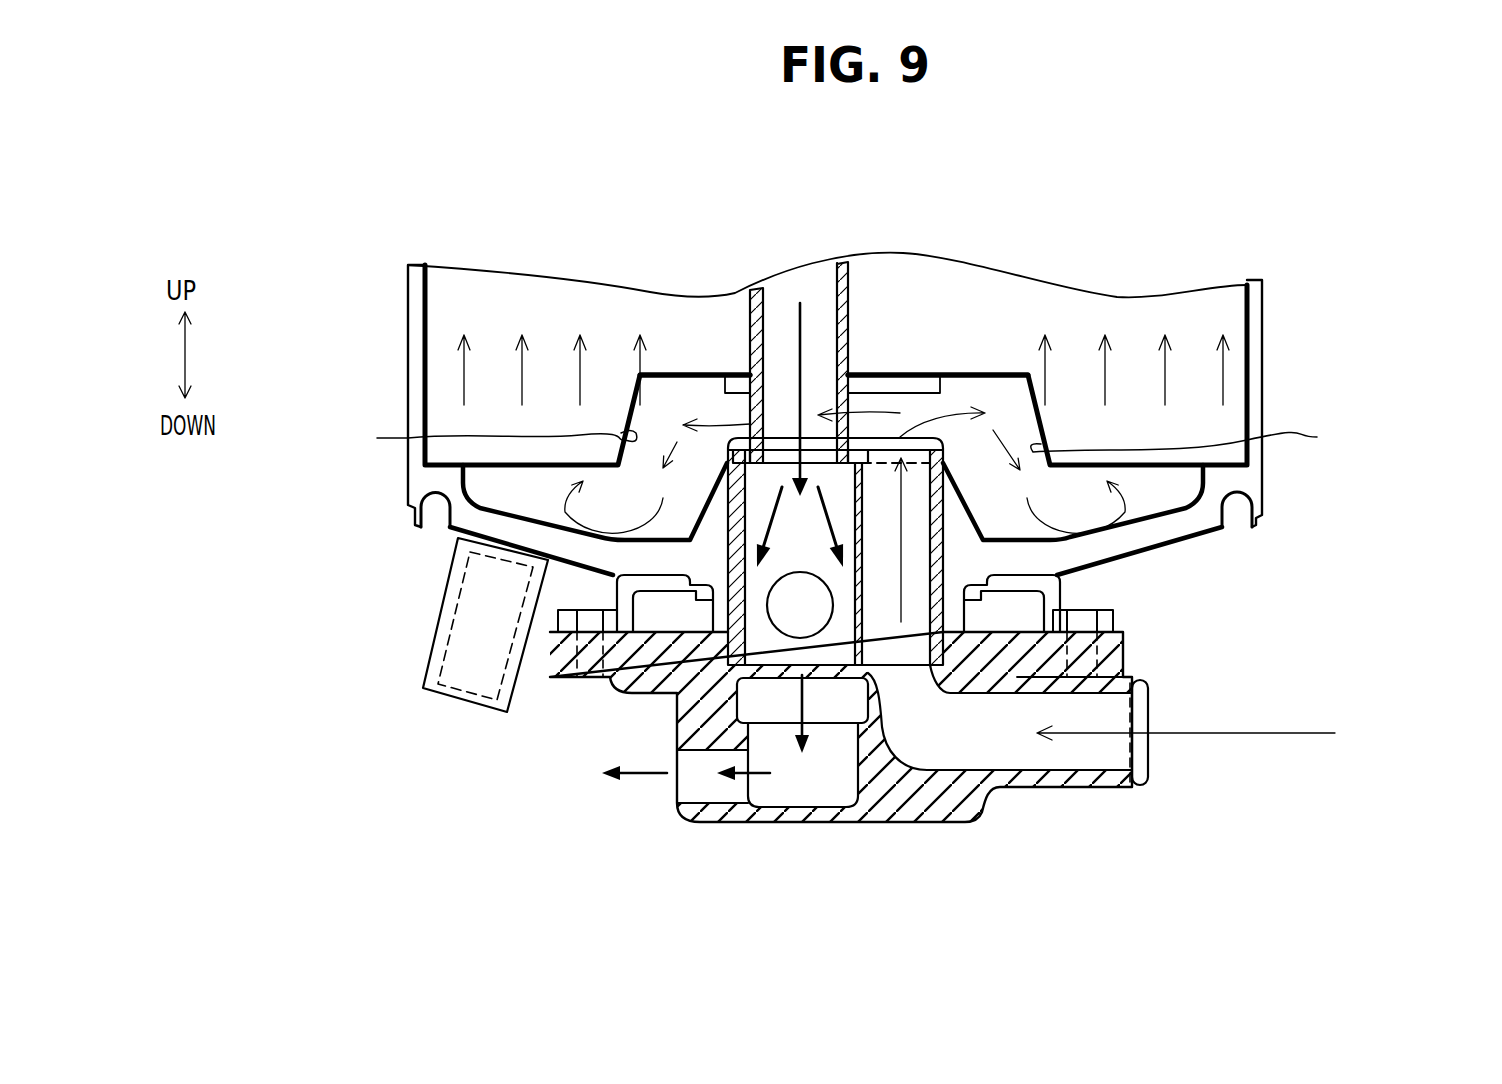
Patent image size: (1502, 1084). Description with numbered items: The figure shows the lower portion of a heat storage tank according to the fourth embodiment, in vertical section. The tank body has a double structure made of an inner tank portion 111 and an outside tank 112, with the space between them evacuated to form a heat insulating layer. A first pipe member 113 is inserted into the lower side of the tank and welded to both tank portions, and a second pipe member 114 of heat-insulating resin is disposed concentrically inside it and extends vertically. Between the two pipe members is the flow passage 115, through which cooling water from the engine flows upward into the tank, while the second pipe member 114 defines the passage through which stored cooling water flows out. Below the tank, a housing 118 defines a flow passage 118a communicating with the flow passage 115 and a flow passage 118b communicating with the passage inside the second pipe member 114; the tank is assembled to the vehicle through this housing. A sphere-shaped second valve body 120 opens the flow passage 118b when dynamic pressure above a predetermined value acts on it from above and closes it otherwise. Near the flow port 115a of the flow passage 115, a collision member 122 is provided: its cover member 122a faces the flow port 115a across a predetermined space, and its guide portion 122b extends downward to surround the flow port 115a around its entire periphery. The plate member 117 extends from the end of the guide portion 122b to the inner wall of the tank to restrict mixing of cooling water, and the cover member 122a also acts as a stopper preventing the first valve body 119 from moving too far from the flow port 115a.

The inner tank portion 111 is at (1247, 307).
The outside tank 112 is at (1263, 336).
The first pipe member 113 is at (948, 548).
The second pipe member 114 is at (745, 318).
The flow passage 115 is at (917, 588).
The flow port 115a is at (905, 440).
The plate member 117 is at (1170, 470).
The housing 118 is at (908, 820).
The flow passage 118a is at (1017, 750).
The flow passage 118b is at (697, 787).
The first valve body 119 is at (867, 383).
The second valve body 120 is at (797, 618).
The collision member 122 is at (998, 356).
The cover member 122a is at (962, 375).
The guide portion 122b is at (845, 437).